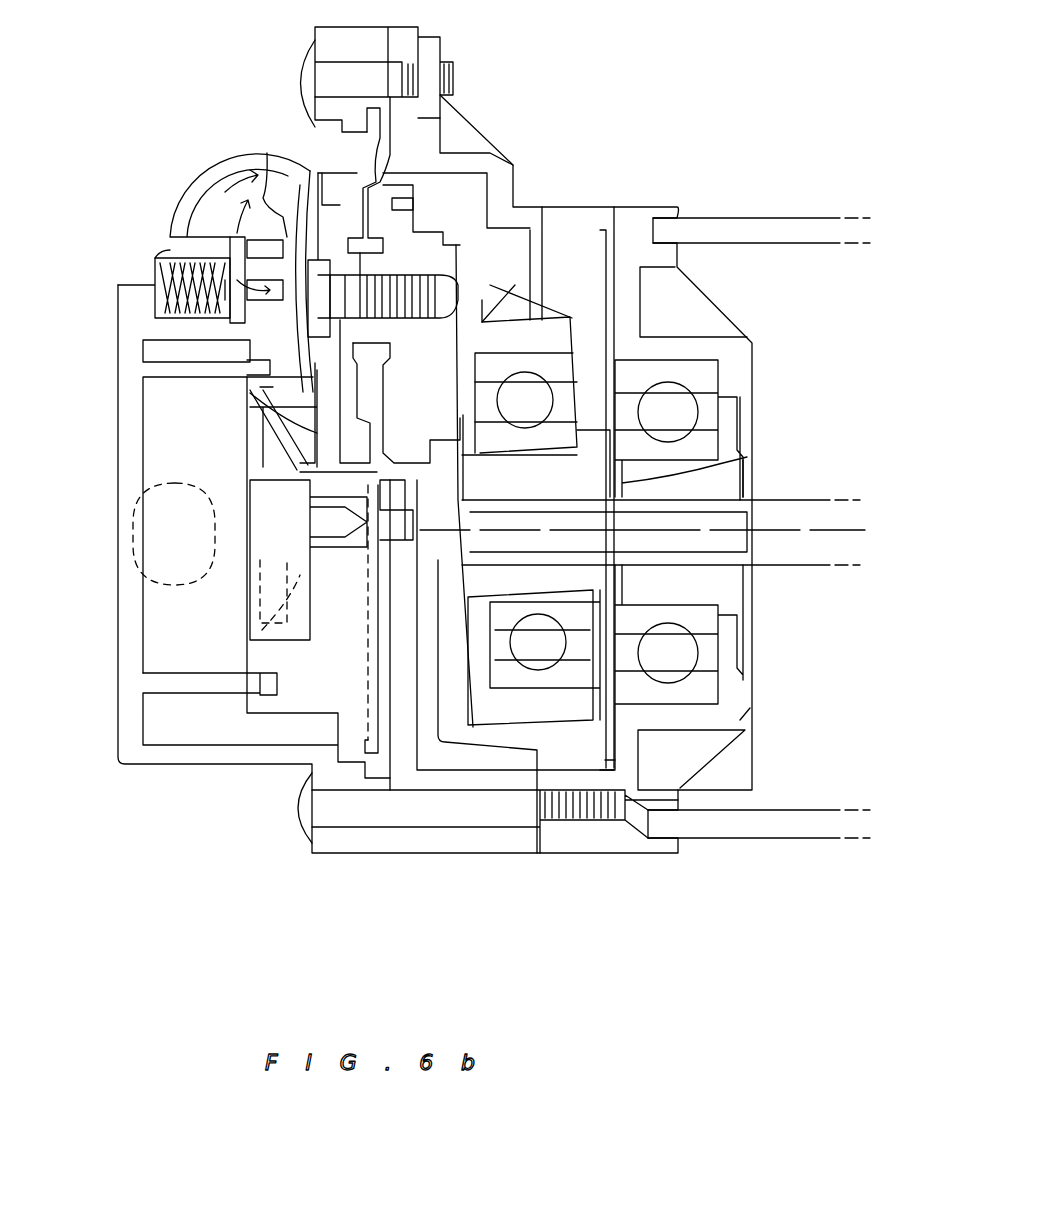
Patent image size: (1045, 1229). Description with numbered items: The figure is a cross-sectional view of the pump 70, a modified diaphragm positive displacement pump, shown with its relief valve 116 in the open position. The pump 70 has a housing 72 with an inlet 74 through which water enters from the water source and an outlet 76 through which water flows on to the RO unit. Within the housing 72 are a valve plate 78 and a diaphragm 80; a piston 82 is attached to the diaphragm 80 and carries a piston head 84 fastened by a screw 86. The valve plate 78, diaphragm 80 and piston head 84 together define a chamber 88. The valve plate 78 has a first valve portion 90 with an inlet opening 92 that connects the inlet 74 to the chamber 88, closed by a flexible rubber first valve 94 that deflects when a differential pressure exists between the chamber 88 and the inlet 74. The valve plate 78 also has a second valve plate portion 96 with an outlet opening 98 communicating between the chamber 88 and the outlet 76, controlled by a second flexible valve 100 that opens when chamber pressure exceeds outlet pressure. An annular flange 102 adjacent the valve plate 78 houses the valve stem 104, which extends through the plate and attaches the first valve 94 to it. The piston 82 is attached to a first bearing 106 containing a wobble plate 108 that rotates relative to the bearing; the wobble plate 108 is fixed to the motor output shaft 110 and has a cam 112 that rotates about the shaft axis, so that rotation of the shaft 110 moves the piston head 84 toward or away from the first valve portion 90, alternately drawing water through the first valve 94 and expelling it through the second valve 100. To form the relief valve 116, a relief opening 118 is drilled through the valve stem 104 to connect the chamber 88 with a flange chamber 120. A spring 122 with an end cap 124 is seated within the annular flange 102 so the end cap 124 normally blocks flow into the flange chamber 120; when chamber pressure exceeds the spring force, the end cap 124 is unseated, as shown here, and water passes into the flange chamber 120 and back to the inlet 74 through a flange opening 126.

The pump 70 is at (625, 180).
The housing 72 is at (256, 758).
The inlet 74 is at (207, 193).
The outlet 76 is at (157, 545).
The valve plate 78 is at (293, 423).
The diaphragm 80 is at (367, 223).
The piston 82 is at (473, 340).
The piston head 84 is at (347, 202).
The screw 86 is at (350, 307).
The chamber 88 is at (325, 407).
The first valve portion 90 is at (263, 392).
The inlet opening 92 is at (232, 237).
The first valve 94 is at (287, 200).
The second valve plate portion 96 is at (313, 583).
The outlet opening 98 is at (290, 473).
The second flexible valve 100 is at (245, 565).
The annular flange 102 is at (200, 240).
The valve stem 104 is at (707, 617).
The first bearing 106 is at (560, 360).
The wobble plate 108 is at (560, 483).
The output shaft 110 is at (770, 512).
The cam 112 is at (747, 468).
The relief valve 116 is at (155, 285).
The relief opening 118 is at (305, 230).
The flange chamber 120 is at (240, 340).
The spring 122 is at (187, 250).
The end cap 124 is at (215, 305).
The flange opening 126 is at (297, 162).